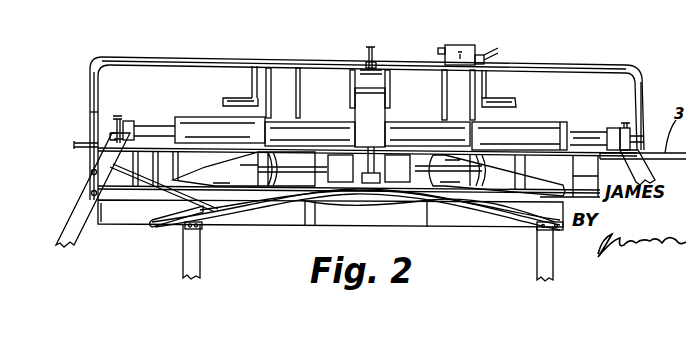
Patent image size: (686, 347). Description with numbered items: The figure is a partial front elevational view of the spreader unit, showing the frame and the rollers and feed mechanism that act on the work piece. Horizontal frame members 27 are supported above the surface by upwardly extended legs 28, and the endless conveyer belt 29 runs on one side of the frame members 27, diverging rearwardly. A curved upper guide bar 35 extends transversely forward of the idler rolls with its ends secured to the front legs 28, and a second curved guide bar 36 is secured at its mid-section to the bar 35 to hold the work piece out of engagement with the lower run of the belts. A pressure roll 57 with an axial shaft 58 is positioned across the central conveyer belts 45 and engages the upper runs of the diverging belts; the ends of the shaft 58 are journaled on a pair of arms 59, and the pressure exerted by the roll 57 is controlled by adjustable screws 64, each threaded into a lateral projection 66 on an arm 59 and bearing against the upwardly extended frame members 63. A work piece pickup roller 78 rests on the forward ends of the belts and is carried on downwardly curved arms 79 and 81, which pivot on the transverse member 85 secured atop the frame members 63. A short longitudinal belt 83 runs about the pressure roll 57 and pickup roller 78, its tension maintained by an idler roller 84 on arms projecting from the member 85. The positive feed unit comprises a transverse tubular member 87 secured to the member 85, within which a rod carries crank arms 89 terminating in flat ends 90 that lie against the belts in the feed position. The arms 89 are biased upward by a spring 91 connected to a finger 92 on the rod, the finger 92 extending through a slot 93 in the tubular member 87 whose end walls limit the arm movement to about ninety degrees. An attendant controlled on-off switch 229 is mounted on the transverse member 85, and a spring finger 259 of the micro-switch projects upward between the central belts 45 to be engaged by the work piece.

The transverse member 85 is at (212, 58).
The transverse tubular member 87 is at (328, 61).
The lateral projection 66 is at (90, 112).
The spring 91 is at (369, 47).
The finger 92 is at (376, 62).
The slot 93 is at (380, 66).
The on-off switch 229 is at (475, 45).
The crank arms 89 is at (252, 90).
The flat ends 90 is at (223, 101).
The arm 79 is at (270, 104).
The idler roller 84 is at (350, 100).
The spring finger 259 is at (356, 116).
The longitudinal belt 83 is at (390, 118).
The arm 81 is at (470, 106).
The axial shaft 58 is at (152, 117).
The work piece pickup roller 78 is at (417, 122).
The pressure roll 57 is at (556, 122).
The arms 59 is at (126, 121).
The adjustable screws 64 is at (118, 116).
The central conveyer belts 45 is at (350, 173).
The upwardly extended frame members 63 is at (82, 180).
The conveyer belt 29 is at (82, 143).
The second curved guide bar 36 is at (255, 212).
The curved upper guide bar 35 is at (200, 229).
The horizontal frame members 27 is at (372, 220).
The legs 28 is at (200, 266).